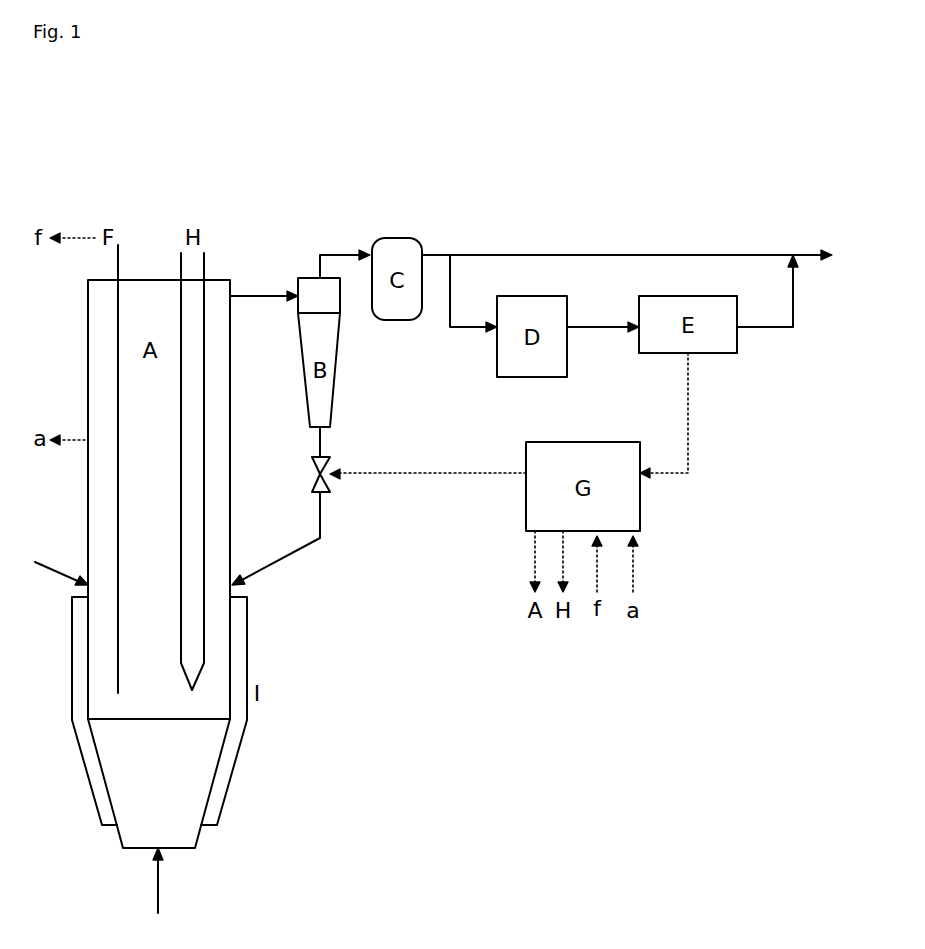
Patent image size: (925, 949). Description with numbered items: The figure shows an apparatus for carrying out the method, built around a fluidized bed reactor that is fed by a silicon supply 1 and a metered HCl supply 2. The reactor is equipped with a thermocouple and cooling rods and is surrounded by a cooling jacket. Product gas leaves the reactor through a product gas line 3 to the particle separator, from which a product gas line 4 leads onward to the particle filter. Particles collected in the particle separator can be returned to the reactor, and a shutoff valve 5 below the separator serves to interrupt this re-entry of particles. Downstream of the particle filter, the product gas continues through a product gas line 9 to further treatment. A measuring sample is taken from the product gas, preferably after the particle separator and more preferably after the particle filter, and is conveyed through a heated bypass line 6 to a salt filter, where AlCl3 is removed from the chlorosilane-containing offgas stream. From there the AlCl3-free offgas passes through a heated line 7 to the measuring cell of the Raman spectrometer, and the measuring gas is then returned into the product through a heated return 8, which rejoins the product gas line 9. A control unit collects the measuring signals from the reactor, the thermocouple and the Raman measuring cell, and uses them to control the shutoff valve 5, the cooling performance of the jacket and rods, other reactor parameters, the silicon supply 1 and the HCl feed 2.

The silicon supply 1 is at (42, 556).
The HCl supply 2 is at (165, 890).
The product gas line to particle separator 3 is at (258, 284).
The product gas line to filter 4 is at (318, 254).
The shutoff valve 5 is at (326, 496).
The heated bypass line 6 is at (458, 336).
The heated line to measuring cell 7 is at (604, 336).
The heated return of measuring gas 8 is at (797, 312).
The product gas line to further treatment 9 is at (566, 252).